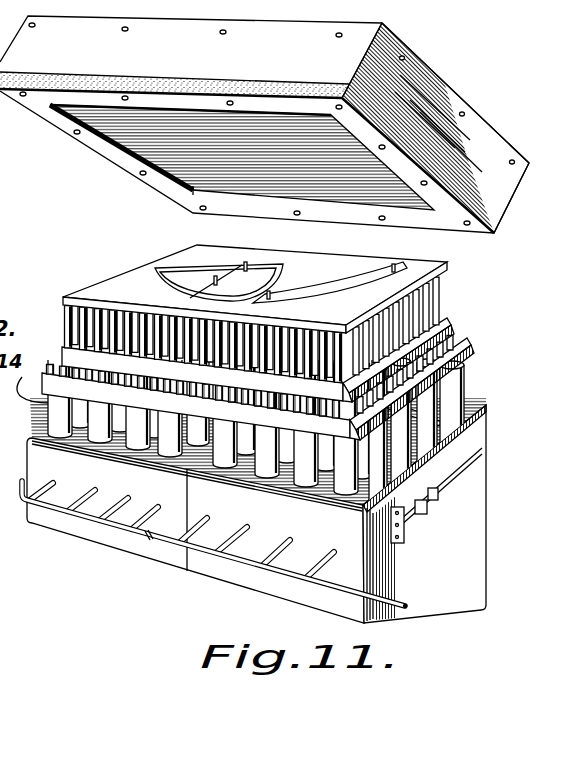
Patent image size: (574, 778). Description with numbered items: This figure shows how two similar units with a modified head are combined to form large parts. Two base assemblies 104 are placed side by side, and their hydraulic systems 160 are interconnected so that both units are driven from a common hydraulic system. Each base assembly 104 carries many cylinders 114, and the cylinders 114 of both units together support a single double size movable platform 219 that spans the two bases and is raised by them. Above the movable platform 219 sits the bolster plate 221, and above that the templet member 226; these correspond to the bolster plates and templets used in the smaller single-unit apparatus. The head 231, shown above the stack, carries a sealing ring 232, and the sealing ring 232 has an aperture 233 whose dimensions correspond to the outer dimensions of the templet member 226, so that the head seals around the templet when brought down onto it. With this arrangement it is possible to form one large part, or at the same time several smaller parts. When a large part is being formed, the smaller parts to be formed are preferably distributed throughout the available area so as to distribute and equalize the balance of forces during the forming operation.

The base assembly 104 is at (108, 543).
The cylinders 114 is at (459, 385).
The hydraulic system 160 is at (50, 515).
The movable platform 219 is at (456, 353).
The bolster plate 221 is at (444, 330).
The templet member 226 is at (428, 268).
The head 231 is at (447, 100).
The sealing ring 232 is at (266, 135).
The aperture 233 is at (128, 160).